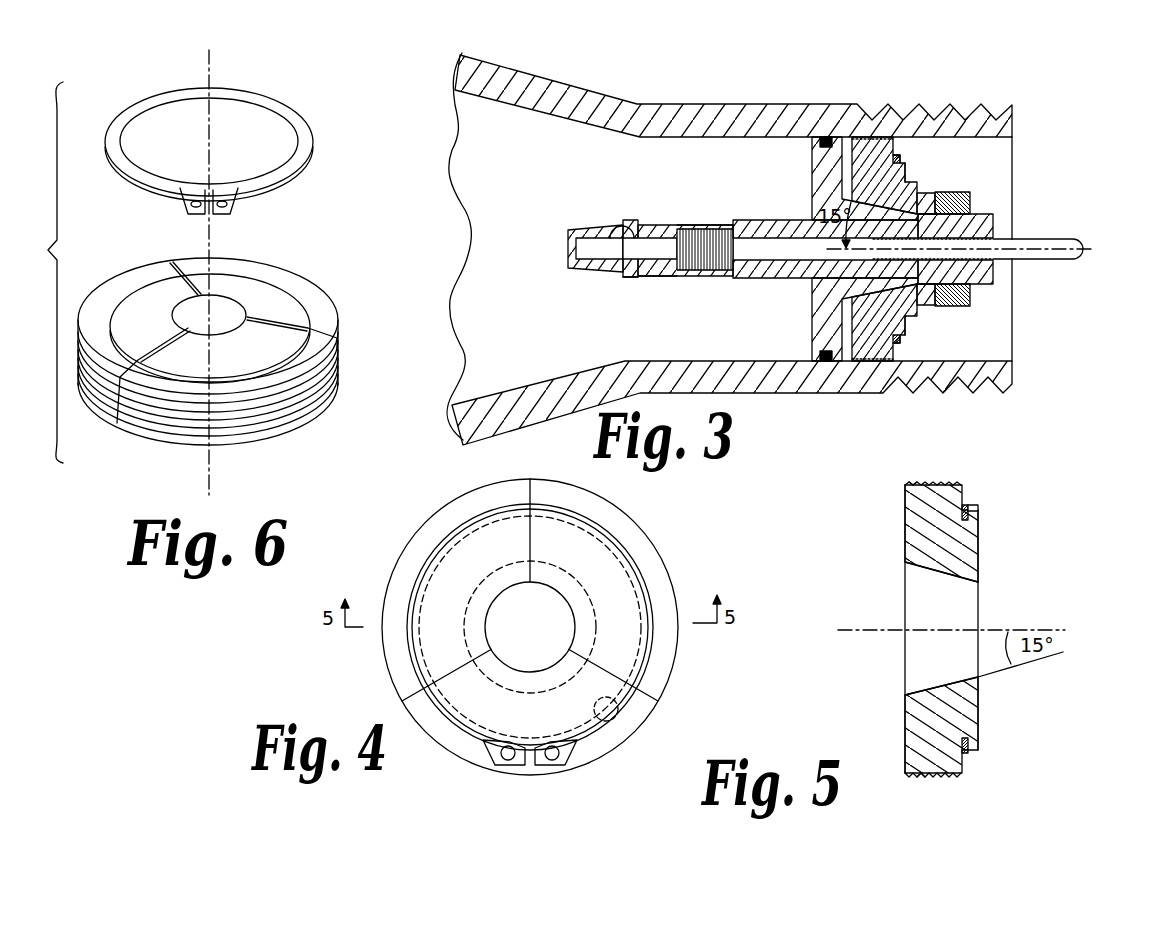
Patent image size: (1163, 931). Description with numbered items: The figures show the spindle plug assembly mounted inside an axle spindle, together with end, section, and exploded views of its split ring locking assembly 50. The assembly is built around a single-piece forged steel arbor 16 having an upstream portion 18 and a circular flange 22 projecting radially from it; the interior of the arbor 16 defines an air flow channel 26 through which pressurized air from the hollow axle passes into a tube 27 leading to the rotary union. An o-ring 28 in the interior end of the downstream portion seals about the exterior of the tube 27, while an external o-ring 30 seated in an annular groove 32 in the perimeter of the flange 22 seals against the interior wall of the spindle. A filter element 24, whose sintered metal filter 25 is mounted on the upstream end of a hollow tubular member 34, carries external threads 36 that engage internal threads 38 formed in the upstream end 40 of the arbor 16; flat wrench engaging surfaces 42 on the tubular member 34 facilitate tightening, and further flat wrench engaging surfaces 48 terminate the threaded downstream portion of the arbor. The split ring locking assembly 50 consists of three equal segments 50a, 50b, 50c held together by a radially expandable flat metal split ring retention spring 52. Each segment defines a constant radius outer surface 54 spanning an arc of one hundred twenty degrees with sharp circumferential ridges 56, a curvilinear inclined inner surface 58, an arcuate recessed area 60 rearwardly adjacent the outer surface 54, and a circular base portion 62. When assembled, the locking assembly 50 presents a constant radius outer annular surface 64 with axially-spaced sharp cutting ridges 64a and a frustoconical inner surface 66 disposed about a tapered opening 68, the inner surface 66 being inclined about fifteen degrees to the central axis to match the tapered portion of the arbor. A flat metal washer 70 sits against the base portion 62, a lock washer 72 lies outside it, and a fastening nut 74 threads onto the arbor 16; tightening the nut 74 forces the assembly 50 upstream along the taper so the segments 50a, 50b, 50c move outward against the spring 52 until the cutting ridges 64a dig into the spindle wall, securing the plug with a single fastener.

In FIG. 3, the arbor 16 is at (728, 249).
In FIG. 3, the upstream portion 18 is at (690, 222).
In FIG. 3, the circular flange 22 is at (812, 170).
In FIG. 3, the filter element 24 is at (633, 214).
In FIG. 3, the filter 25 is at (580, 230).
In FIG. 3, the air flow channel 26 is at (782, 220).
In FIG. 3, the tube 27 is at (1037, 252).
In FIG. 3, the o-ring 28 is at (925, 283).
In FIG. 3, the external o-ring 30 is at (825, 137).
In FIG. 3, the annular groove 32 is at (818, 352).
In FIG. 3, the hollow tubular member 34 is at (610, 228).
In FIG. 3, the external threads 36 is at (648, 222).
In FIG. 3, the internal threads 38 is at (703, 262).
In FIG. 3, the upstream end 40 is at (660, 278).
In FIG. 3, the flat wrench engaging surfaces 42 is at (626, 280).
In FIG. 3, the flat wrench engaging surfaces 48 is at (993, 284).
In FIG. 3, the split ring locking assembly 50 is at (916, 146).
In FIG. 4, the split ring locking assembly 50 is at (652, 526).
In FIG. 6, the split ring locking assembly 50 is at (332, 176).
In FIG. 4, the segment 50a is at (450, 522).
In FIG. 5, the segment 50a is at (917, 513).
In FIG. 6, the segment 50a is at (112, 293).
In FIG. 4, the segment 50b is at (655, 566).
In FIG. 5, the segment 50b is at (958, 715).
In FIG. 6, the segment 50b is at (296, 297).
In FIG. 4, the segment 50c is at (463, 697).
In FIG. 6, the segment 50c is at (262, 347).
In FIG. 3, the split ring retention spring 52 is at (897, 155).
In FIG. 4, the split ring retention spring 52 is at (508, 766).
In FIG. 5, the split ring retention spring 52 is at (965, 503).
In FIG. 6, the split ring retention spring 52 is at (307, 125).
In FIG. 5, the outer surface 54 is at (907, 483).
In FIG. 6, the outer surface 54 is at (323, 404).
In FIG. 5, the sharp circumferential ridges 56 is at (910, 484).
In FIG. 6, the sharp circumferential ridges 56 is at (287, 414).
In FIG. 5, the curvilinear inclined inner surface 58 is at (950, 585).
In FIG. 6, the curvilinear inclined inner surface 58 is at (224, 308).
In FIG. 4, the arcuate recessed area 60 is at (630, 706).
In FIG. 5, the arcuate recessed area 60 is at (975, 510).
In FIG. 3, the circular base portion 62 is at (907, 327).
In FIG. 4, the circular base portion 62 is at (632, 660).
In FIG. 5, the circular base portion 62 is at (980, 545).
In FIG. 6, the circular base portion 62 is at (292, 310).
In FIG. 5, the outer annular surface 64 is at (910, 775).
In FIG. 3, the sharp cutting ridges 64a is at (856, 137).
In FIG. 5, the sharp cutting ridges 64a is at (922, 778).
In FIG. 5, the frustoconical inner surface 66 is at (922, 692).
In FIG. 5, the tapered opening 68 is at (912, 645).
In FIG. 3, the flat metal washer 70 is at (918, 200).
In FIG. 3, the lock washer 72 is at (924, 205).
In FIG. 3, the fastening nut 74 is at (972, 185).